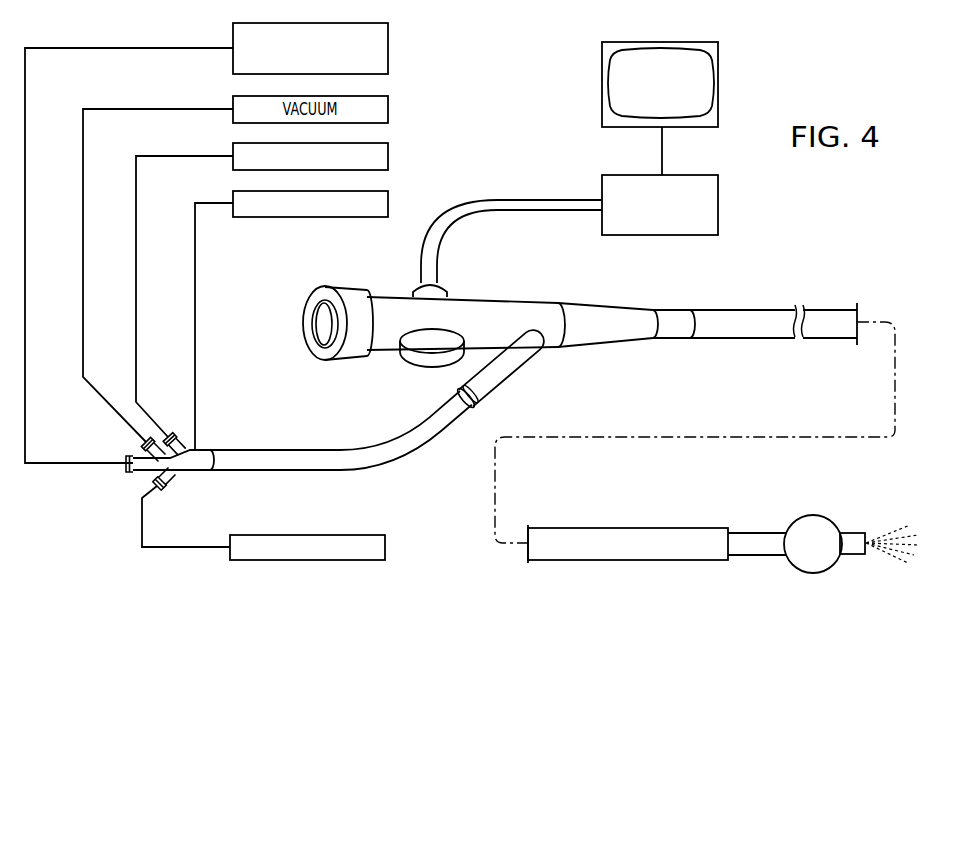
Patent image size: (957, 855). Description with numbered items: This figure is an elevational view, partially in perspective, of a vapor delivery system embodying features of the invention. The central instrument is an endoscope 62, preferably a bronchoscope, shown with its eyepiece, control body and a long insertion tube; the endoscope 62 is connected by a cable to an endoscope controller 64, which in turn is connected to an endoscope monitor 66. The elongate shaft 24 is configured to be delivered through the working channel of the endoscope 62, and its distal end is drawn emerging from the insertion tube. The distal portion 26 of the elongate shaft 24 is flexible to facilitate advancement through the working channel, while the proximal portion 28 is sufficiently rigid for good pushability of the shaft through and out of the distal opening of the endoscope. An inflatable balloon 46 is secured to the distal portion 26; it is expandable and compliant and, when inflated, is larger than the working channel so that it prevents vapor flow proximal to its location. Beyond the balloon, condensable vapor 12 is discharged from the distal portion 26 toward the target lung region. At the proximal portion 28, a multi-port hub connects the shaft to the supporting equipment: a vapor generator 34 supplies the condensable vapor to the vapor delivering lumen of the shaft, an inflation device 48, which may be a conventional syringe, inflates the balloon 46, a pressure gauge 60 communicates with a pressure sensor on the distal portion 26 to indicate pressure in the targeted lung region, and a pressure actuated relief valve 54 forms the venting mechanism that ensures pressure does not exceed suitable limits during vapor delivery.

The condensable vapor 12 is at (892, 525).
The elongate shaft 24 is at (745, 532).
The distal portion 26 is at (855, 557).
The proximal portion 28 is at (212, 472).
The vapor generator 34 is at (388, 66).
The inflatable balloon 46 is at (818, 515).
The inflation device 48 is at (388, 160).
The relief valve 54 is at (385, 552).
The pressure gauge 60 is at (388, 208).
The endoscope 62 is at (530, 303).
The endoscope controller 64 is at (602, 187).
The endoscope monitor 66 is at (602, 103).